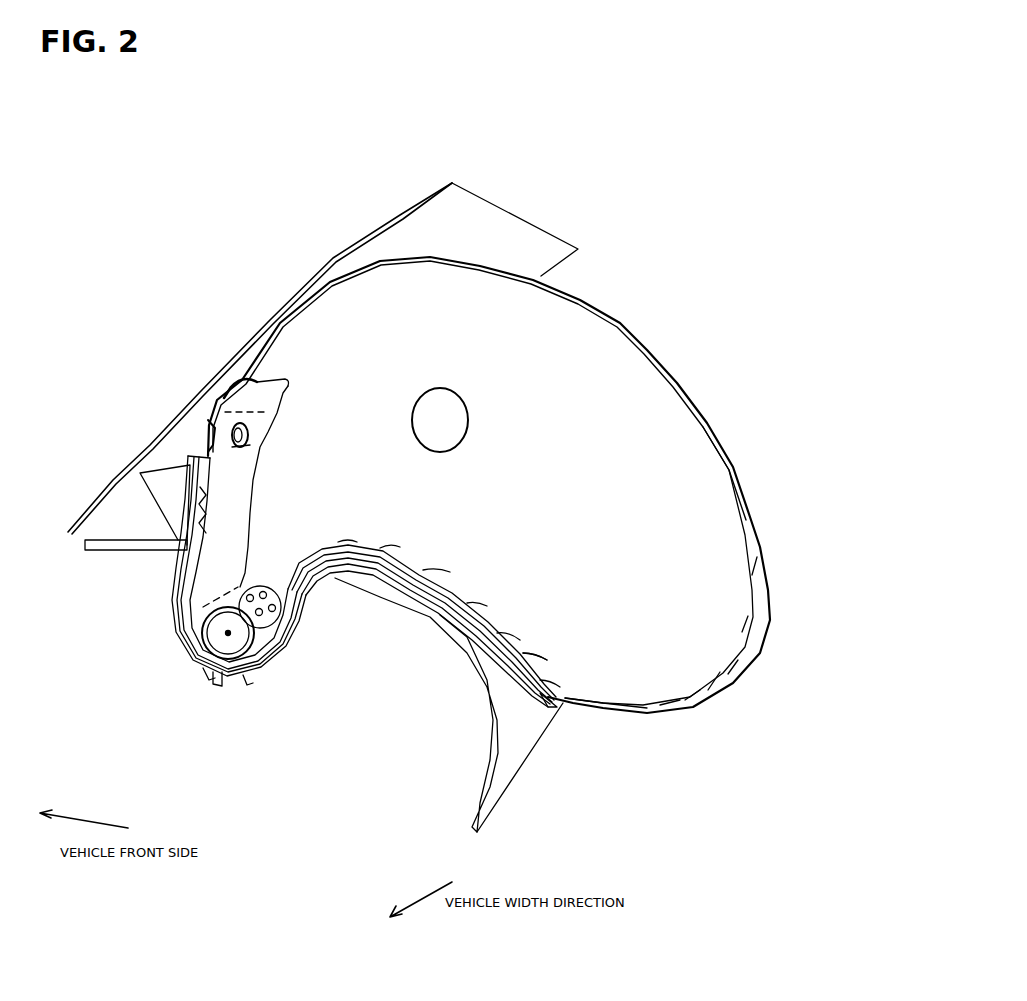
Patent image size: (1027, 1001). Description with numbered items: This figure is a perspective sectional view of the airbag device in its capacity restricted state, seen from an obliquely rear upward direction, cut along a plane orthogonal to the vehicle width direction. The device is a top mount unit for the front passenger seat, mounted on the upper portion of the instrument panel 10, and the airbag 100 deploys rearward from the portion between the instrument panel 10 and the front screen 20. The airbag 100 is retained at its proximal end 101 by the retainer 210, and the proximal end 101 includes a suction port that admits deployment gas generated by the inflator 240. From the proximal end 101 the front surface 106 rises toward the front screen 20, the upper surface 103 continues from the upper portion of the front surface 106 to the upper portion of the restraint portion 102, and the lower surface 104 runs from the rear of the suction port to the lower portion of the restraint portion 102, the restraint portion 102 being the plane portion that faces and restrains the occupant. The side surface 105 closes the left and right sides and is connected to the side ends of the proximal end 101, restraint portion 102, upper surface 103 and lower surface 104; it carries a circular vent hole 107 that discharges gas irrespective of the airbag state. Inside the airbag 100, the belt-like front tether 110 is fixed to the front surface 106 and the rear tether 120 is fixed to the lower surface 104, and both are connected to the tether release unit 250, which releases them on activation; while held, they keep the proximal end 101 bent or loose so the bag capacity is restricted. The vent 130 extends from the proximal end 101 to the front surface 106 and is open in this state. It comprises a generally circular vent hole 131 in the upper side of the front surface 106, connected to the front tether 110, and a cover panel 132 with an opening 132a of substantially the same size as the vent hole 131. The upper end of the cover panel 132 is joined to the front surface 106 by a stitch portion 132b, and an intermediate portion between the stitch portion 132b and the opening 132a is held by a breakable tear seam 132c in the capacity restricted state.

The instrument panel 10 is at (517, 777).
The front screen 20 is at (420, 204).
The airbag 100 is at (548, 478).
The proximal end 101 is at (297, 582).
The restraint portion 102 is at (767, 621).
The upper surface 103 is at (648, 350).
The lower surface 104 is at (600, 705).
The side surface 105 is at (577, 504).
The front surface 106 is at (200, 503).
The vent hole 107 is at (467, 423).
The front tether 110 is at (192, 549).
The rear tether 120 is at (517, 647).
The vent 130 is at (240, 457).
The vent hole 131 is at (213, 443).
The cover panel 132 is at (264, 430).
The opening 132a is at (250, 444).
The stitch portion 132b is at (230, 391).
The tear seam 132c is at (264, 412).
The retainer 210 is at (270, 655).
The inflator 240 is at (228, 633).
The tether release unit 250 is at (203, 672).